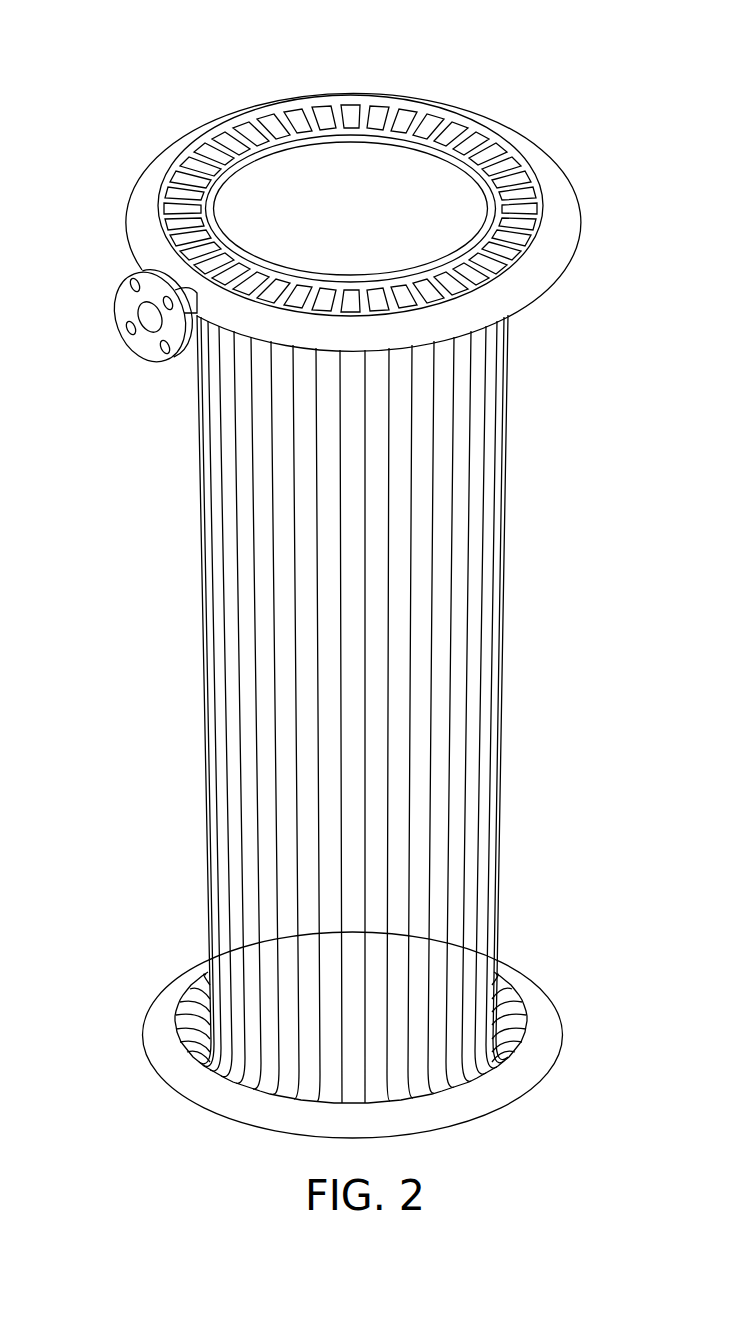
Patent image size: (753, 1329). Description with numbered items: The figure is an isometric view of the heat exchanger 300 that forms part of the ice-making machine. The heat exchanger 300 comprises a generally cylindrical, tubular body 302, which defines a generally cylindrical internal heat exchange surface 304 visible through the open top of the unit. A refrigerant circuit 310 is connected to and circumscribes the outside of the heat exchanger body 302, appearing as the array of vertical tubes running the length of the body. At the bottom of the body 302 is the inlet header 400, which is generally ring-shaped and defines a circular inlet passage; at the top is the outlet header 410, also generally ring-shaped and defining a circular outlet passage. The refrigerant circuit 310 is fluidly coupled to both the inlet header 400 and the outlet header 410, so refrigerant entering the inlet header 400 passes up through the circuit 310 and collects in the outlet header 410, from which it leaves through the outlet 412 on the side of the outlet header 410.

The heat exchanger 300 is at (603, 117).
The heat exchanger body 302 is at (268, 173).
The internal heat exchange surface 304 is at (377, 163).
The refrigerant circuit 310 is at (247, 872).
The inlet header 400 is at (198, 1083).
The outlet header 410 is at (547, 257).
The outlet 412 is at (158, 345).